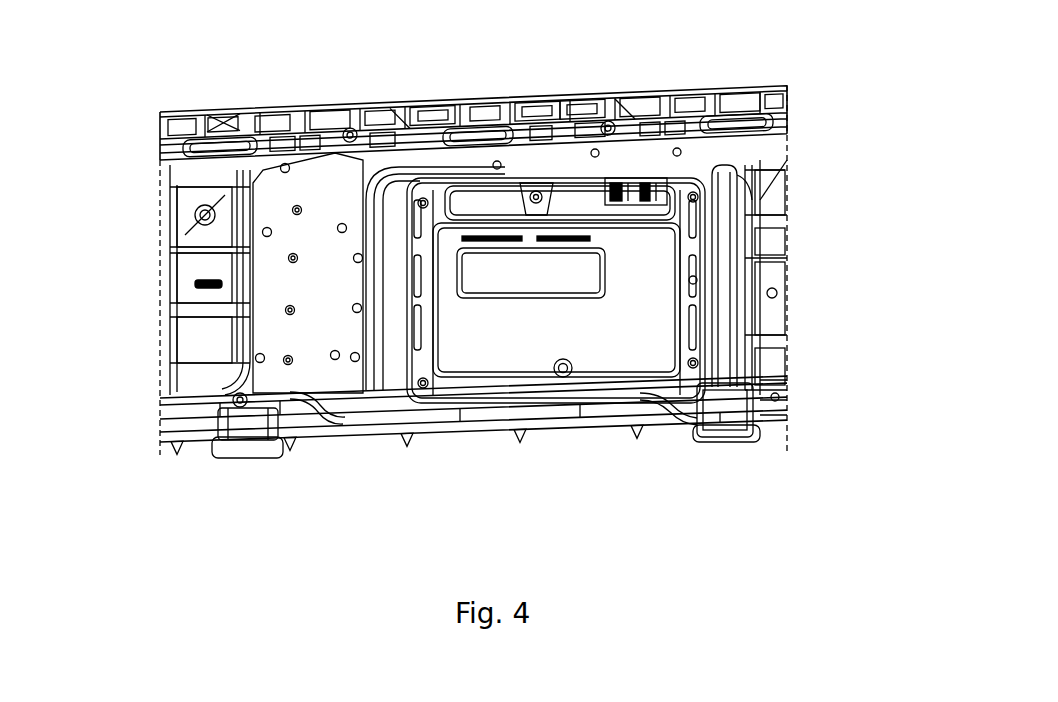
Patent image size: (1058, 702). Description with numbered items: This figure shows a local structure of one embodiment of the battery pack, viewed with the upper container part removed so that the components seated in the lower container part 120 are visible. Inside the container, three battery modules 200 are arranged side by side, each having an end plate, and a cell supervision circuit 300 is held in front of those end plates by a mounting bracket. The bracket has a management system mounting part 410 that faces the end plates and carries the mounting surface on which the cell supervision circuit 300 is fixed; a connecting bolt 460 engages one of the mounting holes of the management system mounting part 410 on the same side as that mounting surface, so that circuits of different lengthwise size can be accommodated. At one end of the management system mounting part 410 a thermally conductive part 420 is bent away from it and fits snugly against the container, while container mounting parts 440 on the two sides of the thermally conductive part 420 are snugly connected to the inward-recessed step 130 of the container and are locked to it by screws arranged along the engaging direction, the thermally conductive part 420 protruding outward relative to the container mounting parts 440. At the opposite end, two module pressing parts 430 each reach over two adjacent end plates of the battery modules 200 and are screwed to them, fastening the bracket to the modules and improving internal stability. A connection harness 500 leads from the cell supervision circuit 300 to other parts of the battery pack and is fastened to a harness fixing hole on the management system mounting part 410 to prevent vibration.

The lower container part 120 is at (298, 440).
The step 130 is at (787, 408).
The battery module 200 is at (408, 130).
The cell supervision circuit 300 is at (590, 357).
The management system mounting part 410 is at (203, 223).
The thermally conductive part 420 is at (298, 402).
The module pressing part 430 is at (581, 92).
The container mounting part 440 is at (737, 363).
The connecting bolt 460 is at (733, 197).
The connection harness 500 is at (363, 193).